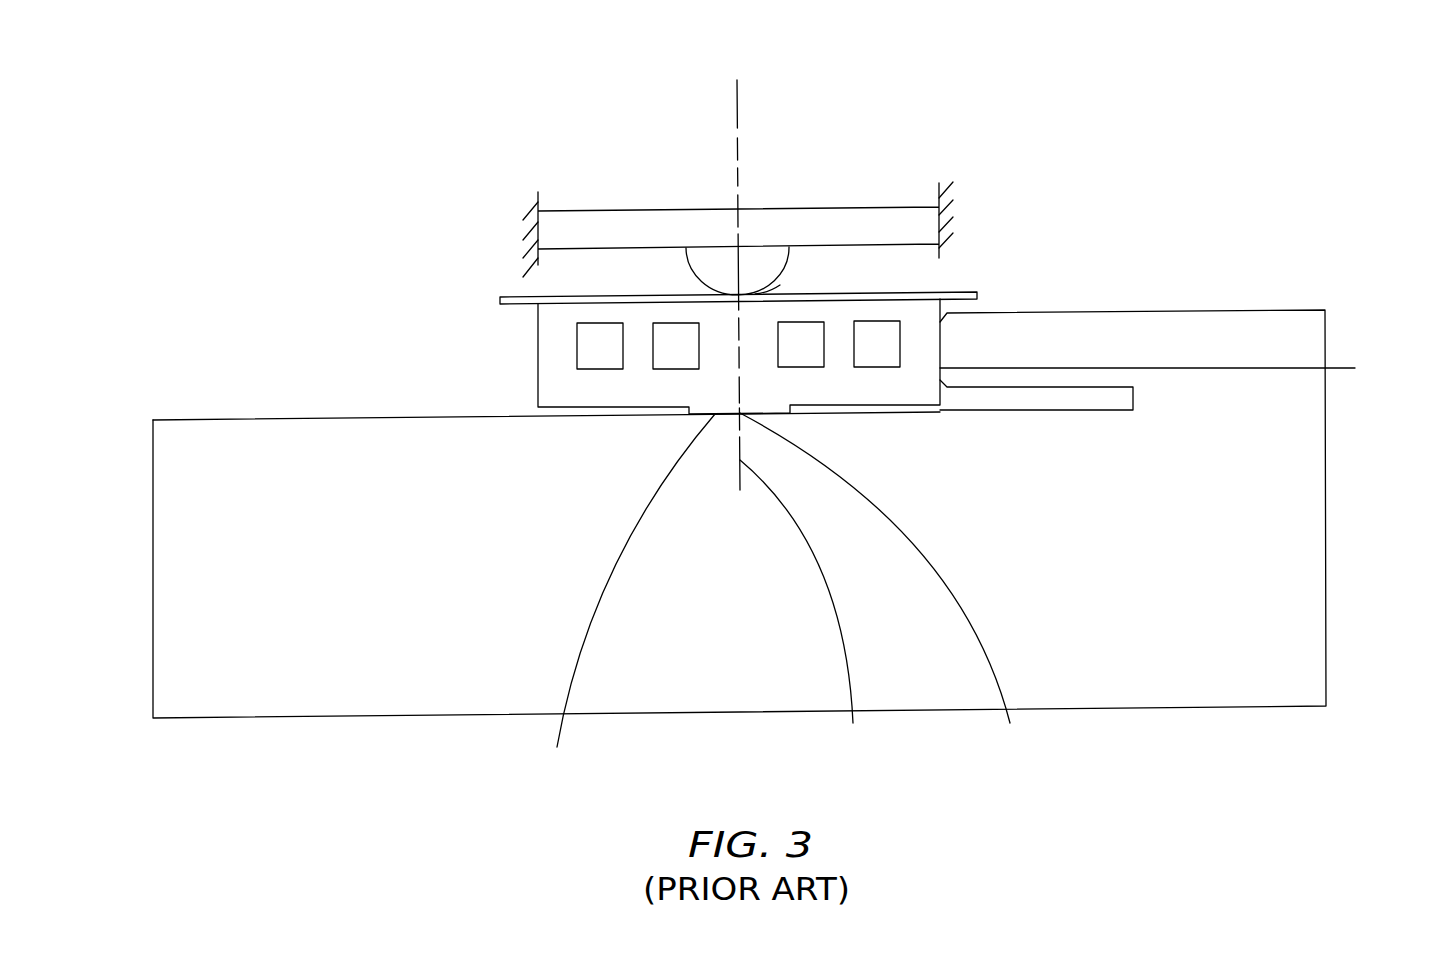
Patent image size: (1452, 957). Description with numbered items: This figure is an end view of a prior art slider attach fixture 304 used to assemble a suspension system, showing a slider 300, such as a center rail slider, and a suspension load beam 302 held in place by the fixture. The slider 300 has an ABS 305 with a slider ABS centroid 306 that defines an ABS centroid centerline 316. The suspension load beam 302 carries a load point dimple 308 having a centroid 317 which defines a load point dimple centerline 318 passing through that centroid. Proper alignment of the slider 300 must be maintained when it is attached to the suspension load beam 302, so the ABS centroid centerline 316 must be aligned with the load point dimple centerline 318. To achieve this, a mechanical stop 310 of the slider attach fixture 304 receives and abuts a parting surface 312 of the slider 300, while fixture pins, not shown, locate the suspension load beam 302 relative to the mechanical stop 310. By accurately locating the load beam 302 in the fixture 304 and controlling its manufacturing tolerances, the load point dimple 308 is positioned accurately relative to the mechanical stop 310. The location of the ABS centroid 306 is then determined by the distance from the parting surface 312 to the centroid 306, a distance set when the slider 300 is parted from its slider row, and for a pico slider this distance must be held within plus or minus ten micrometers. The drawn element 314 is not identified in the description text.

The slider 300 is at (1235, 147).
The suspension load beam 302 is at (915, 223).
The slider attach fixture 304 is at (1290, 333).
The ABS 305 is at (625, 601).
The slider ABS centroid 306 is at (888, 588).
The load point dimple 308 is at (755, 257).
The mechanical stop 310 is at (940, 347).
The parting surface 312 is at (1172, 368).
The cover plate 314 is at (980, 288).
The ABS centroid centerline 316 is at (810, 611).
The centroid 317 is at (767, 258).
The load point dimple centerline 318 is at (735, 118).